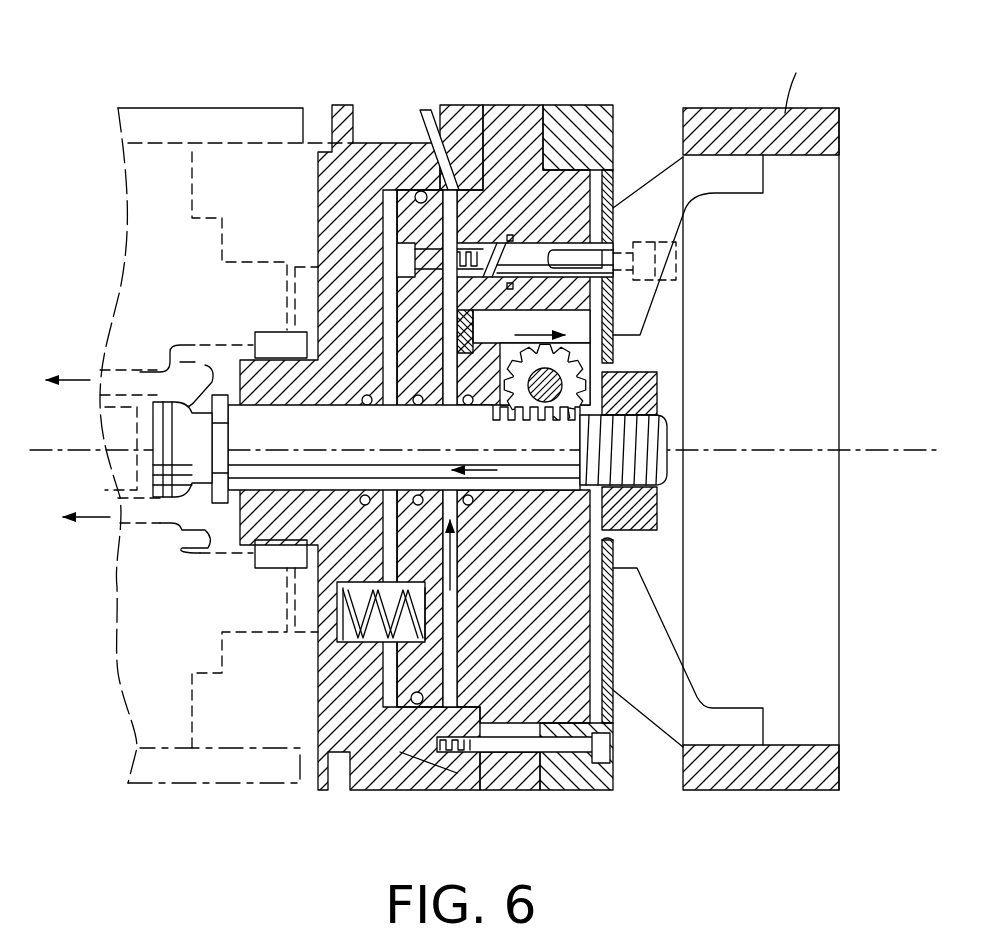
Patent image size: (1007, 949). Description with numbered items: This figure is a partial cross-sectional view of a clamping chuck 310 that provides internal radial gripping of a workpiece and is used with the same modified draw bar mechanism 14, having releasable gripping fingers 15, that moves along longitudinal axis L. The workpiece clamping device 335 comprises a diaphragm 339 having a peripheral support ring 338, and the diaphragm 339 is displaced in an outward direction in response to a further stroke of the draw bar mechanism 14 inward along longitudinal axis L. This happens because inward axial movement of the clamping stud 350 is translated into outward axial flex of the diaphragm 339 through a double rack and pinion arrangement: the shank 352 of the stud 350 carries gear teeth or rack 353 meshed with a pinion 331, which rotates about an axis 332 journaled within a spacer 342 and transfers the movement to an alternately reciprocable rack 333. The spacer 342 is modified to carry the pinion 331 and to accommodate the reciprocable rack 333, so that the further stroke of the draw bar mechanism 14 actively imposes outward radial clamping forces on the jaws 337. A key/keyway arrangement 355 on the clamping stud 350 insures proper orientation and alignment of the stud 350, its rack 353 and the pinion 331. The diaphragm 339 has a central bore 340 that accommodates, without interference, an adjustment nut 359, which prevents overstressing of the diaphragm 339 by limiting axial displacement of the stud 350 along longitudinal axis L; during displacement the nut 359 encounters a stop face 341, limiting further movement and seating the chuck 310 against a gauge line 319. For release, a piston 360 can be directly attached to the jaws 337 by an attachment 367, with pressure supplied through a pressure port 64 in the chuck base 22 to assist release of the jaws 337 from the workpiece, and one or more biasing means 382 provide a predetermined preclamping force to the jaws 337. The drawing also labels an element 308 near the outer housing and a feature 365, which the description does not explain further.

The clamping chuck 310 is at (485, 433).
The workpiece clamping device 335 is at (725, 425).
The housing wall 308 is at (822, 160).
The jaws 337 is at (688, 205).
The reciprocable rack 333 is at (613, 352).
The passage 365 is at (423, 133).
The attachment 367 is at (530, 257).
The pressure port 64 is at (340, 212).
The pinion 331 is at (507, 388).
The axis 332 is at (556, 422).
The shank 352 is at (305, 441).
The rack 353 is at (478, 425).
The key/keyway arrangement 355 is at (312, 500).
The clamping stud 350 is at (452, 560).
The piston 360 is at (440, 592).
The spacer 342 is at (530, 670).
The biasing means 382 is at (317, 627).
The gauge line 319 is at (318, 692).
The gripping fingers 15 is at (178, 527).
The draw bar mechanism 14 is at (93, 544).
The longitudinal axis L is at (68, 418).
The adjustment nut 359 is at (653, 497).
The central bore 340 is at (609, 535).
The diaphragm 339 is at (607, 600).
The stop face 341 is at (607, 657).
The peripheral support ring 338 is at (563, 782).
The chuck base 22 is at (410, 785).